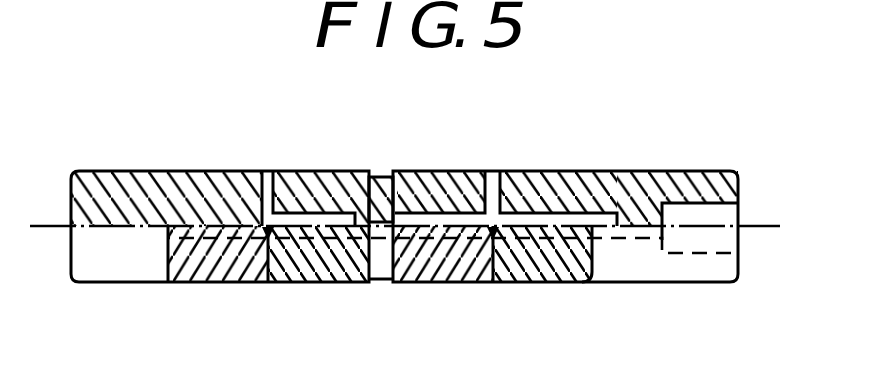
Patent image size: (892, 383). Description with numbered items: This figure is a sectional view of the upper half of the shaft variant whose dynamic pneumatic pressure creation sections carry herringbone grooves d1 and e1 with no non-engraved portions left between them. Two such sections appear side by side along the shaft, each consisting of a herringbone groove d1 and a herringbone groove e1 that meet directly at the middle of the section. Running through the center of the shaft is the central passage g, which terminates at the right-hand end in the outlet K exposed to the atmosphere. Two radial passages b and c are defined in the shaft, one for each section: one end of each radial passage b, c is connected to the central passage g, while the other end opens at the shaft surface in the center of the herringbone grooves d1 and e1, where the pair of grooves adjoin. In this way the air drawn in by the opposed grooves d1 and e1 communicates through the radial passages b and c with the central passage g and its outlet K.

The radial passage b is at (268, 180).
The radial passage c is at (492, 180).
The central passage g is at (617, 222).
The outlet K is at (733, 213).
The herringbone groove d1 is at (215, 284).
The herringbone groove e1 is at (327, 285).